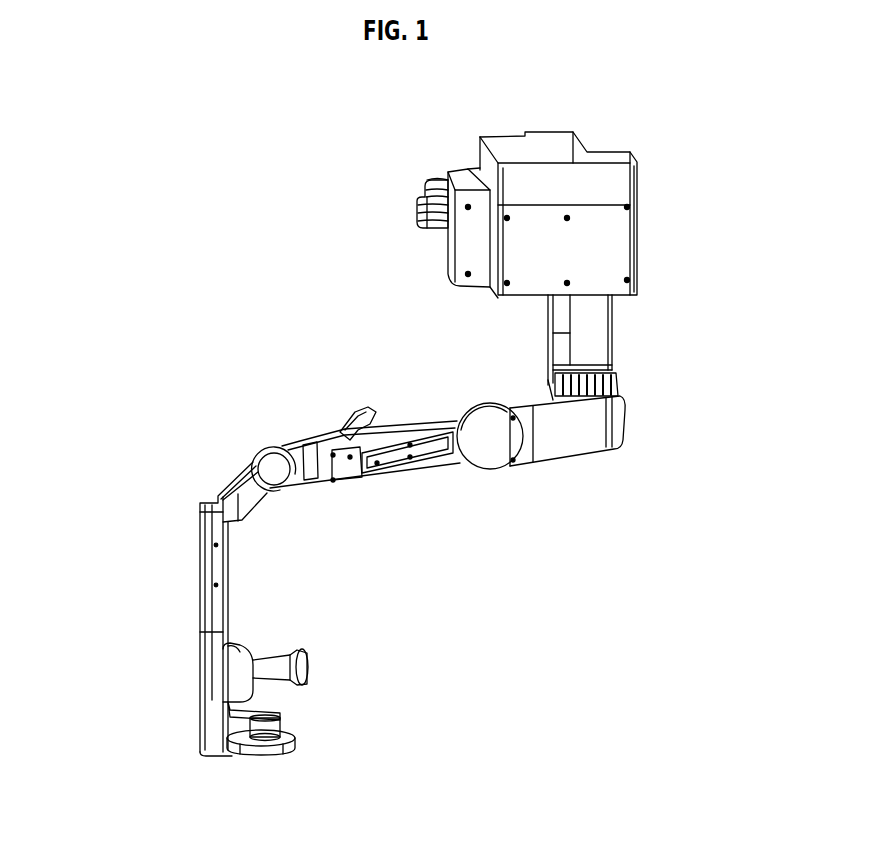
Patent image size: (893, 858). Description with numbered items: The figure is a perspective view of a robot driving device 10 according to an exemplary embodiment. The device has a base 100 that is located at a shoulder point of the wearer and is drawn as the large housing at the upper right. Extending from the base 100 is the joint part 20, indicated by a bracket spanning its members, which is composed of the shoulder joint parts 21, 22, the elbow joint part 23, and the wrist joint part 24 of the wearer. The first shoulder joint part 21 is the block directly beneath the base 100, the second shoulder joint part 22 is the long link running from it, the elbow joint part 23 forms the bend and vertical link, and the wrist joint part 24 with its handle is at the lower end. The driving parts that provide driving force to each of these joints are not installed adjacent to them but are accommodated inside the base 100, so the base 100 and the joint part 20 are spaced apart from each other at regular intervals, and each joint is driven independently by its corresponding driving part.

The robot driving device 10 is at (445, 163).
The base 100 is at (615, 228).
The joint part 20 is at (192, 248).
The shoulder joint part 21 is at (547, 380).
The shoulder joint part 22 is at (487, 435).
The elbow joint part 23 is at (218, 496).
The wrist joint part 24 is at (205, 743).